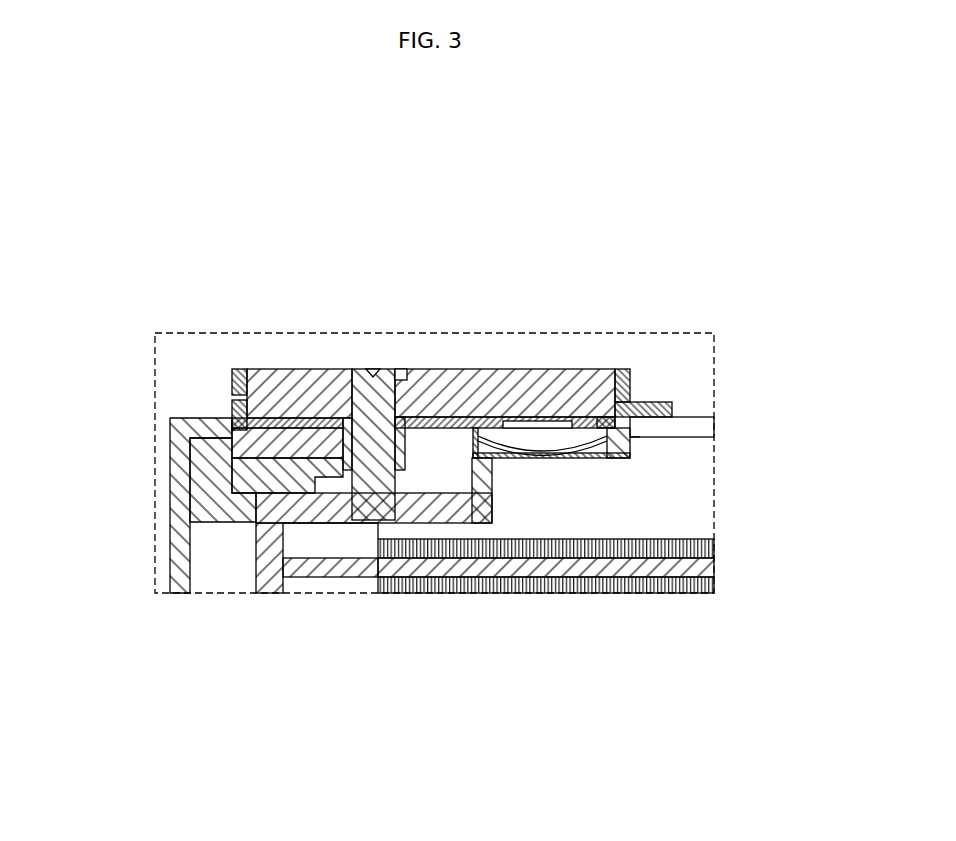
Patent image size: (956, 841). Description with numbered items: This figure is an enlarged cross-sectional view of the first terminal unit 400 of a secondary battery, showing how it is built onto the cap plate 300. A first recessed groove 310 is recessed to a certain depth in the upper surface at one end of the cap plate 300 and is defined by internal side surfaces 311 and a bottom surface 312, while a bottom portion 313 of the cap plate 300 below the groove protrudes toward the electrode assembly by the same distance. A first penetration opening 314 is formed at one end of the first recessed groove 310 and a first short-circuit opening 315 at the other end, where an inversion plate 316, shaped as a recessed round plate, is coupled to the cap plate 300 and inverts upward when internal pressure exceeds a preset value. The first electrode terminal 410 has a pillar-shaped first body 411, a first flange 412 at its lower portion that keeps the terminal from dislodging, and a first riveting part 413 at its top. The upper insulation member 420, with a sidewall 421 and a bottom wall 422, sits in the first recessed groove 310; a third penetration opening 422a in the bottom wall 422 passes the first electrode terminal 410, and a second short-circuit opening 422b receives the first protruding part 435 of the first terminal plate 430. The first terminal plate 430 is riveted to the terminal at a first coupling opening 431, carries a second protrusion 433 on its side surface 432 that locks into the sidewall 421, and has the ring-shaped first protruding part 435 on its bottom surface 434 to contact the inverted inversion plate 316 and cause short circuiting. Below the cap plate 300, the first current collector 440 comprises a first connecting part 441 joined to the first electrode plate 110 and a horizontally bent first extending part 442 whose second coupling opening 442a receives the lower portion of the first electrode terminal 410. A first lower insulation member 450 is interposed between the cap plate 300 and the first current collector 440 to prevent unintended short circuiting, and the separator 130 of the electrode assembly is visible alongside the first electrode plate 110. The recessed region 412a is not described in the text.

The first terminal unit 400 is at (108, 296).
The cap plate 300 is at (668, 428).
The first recessed groove 310 is at (257, 494).
The internal side surfaces 311 is at (232, 402).
The bottom surface 312 is at (243, 429).
The bottom portion 313 is at (242, 450).
The first penetration opening 314 is at (272, 479).
The first short-circuit opening 315 is at (258, 505).
The inversion plate 316 is at (185, 523).
The first electrode terminal 410 is at (504, 334).
The first body 411 is at (425, 400).
The first flange 412 is at (503, 420).
The recess 412a is at (572, 424).
The first riveting part 413 is at (398, 372).
The upper insulation member 420 is at (730, 402).
The sidewall 421 is at (630, 375).
The bottom wall 422 is at (672, 412).
The third penetration opening 422a is at (520, 457).
The second short-circuit opening 422b is at (569, 356).
The first terminal plate 430 is at (324, 380).
The first coupling opening 431 is at (362, 400).
The side surface 432 is at (226, 385).
The second protrusion 433 is at (232, 393).
The bottom surface 434 is at (264, 423).
The first protruding part 435 is at (410, 377).
The first current collector 440 is at (350, 612).
The first connecting part 441 is at (276, 582).
The first extending part 442 is at (425, 525).
The second coupling opening 442a is at (369, 525).
The first lower insulation member 450 is at (485, 512).
The first electrode plate 110 is at (700, 567).
The separator 130 is at (700, 551).